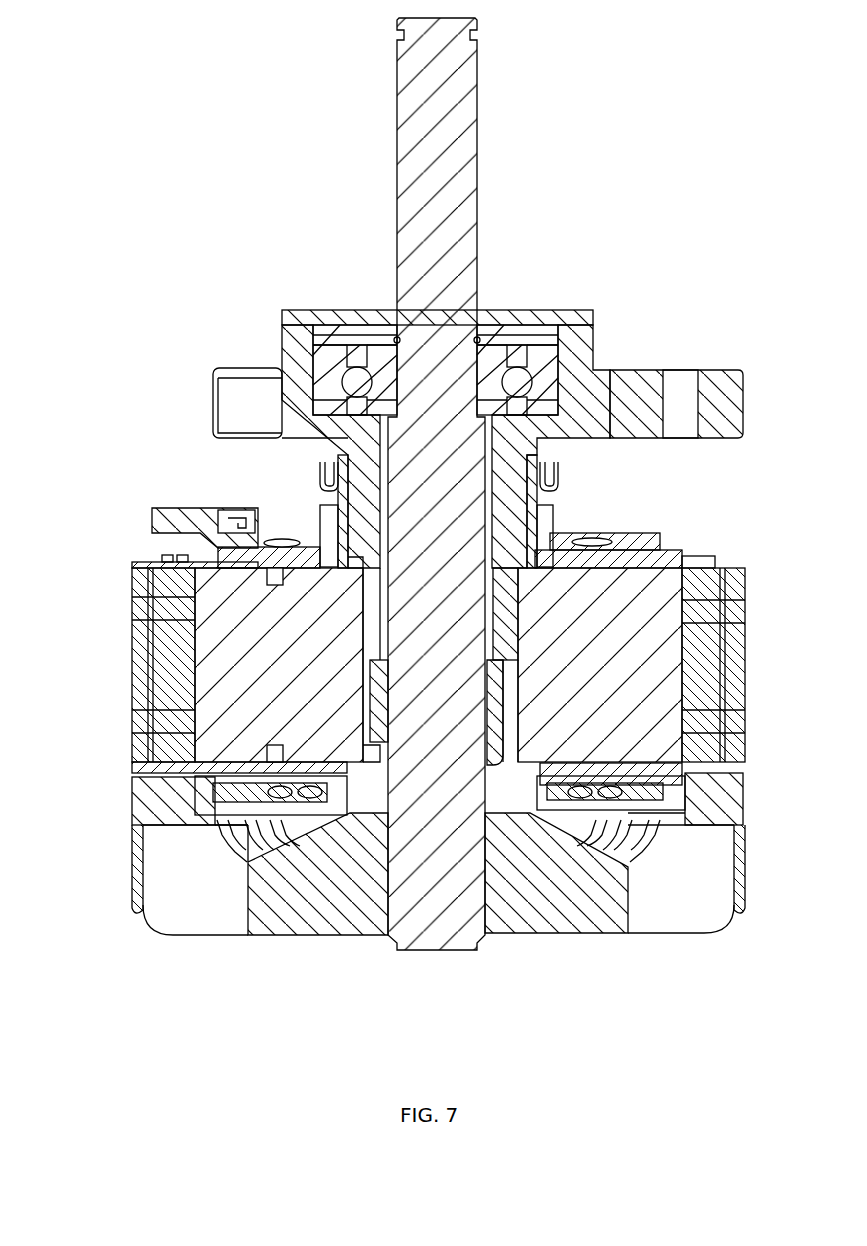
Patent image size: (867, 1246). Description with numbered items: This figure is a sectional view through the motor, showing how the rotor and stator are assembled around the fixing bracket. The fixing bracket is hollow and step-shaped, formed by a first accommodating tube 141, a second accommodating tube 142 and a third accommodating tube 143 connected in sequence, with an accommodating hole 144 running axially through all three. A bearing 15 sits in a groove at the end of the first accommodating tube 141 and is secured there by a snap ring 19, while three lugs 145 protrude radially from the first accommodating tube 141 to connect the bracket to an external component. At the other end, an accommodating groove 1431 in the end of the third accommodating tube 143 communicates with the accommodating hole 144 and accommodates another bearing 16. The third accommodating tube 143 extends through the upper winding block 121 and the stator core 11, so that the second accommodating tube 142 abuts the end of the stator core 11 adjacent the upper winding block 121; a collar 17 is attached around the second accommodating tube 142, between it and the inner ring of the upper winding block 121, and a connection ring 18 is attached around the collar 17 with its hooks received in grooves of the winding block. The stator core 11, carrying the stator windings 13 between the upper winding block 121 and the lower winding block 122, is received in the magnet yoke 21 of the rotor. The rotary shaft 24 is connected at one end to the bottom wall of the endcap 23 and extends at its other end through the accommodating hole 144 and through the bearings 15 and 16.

The rotary shaft 24 is at (430, 191).
The snap ring 19 is at (538, 332).
The first accommodating tube 141 is at (298, 342).
The lugs 145 is at (633, 392).
The bearing 15 is at (330, 403).
The second accommodating tube 142 is at (342, 478).
The connection ring 18 is at (553, 480).
The collar 17 is at (548, 508).
The stator windings 13 is at (180, 515).
The upper winding block 121 is at (235, 553).
The stator core 11 is at (345, 590).
The magnet yoke 21 is at (720, 636).
The third accommodating tube 143 is at (362, 581).
The accommodating hole 144 is at (367, 661).
The bearing 16 is at (497, 718).
The accommodating groove 1431 is at (370, 762).
The lower winding block 122 is at (210, 800).
The endcap 23 is at (565, 930).